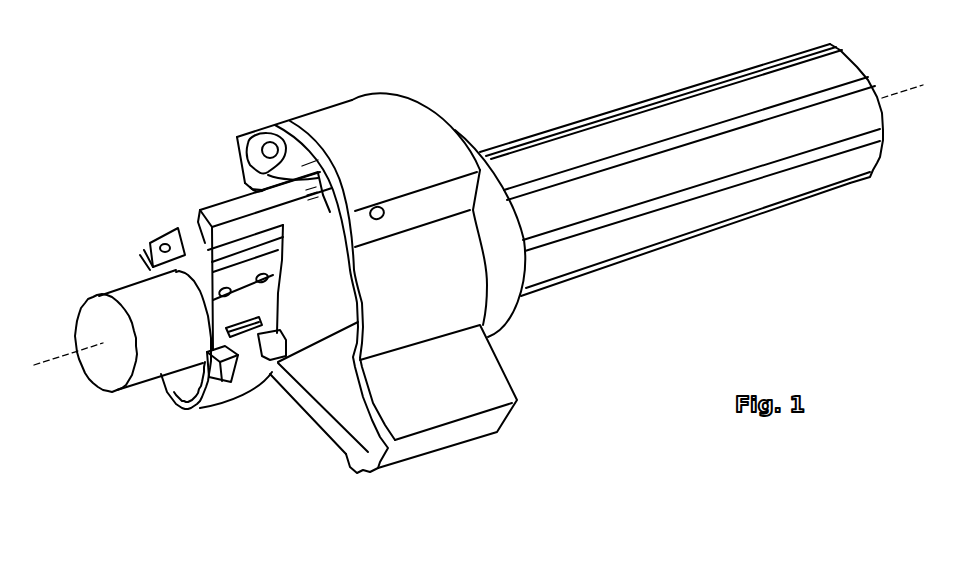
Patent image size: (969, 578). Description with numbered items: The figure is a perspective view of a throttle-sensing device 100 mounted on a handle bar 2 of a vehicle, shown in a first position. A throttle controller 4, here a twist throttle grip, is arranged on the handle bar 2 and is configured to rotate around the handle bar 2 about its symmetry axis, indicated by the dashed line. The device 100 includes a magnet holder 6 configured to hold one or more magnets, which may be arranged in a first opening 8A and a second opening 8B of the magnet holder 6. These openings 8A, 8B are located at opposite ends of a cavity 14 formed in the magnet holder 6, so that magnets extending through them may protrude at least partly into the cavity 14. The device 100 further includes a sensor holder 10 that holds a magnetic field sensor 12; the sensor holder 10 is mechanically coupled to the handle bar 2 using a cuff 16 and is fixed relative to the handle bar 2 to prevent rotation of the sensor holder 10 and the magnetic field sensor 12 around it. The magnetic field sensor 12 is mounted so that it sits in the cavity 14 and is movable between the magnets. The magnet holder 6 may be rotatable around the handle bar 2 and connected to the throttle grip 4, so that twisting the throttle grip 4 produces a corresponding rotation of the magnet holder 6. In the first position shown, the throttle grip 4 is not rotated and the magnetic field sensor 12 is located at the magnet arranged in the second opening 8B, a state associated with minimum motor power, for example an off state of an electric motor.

The device 100 is at (222, 103).
The handle bar 2 is at (95, 313).
The throttle controller 4 is at (608, 133).
The magnet holder 6 is at (381, 257).
The first opening 8A is at (276, 146).
The second opening 8B is at (380, 208).
The sensor holder 10 is at (207, 232).
The magnetic field sensor 12 is at (244, 187).
The cavity 14 is at (300, 164).
The cuff 16 is at (222, 317).